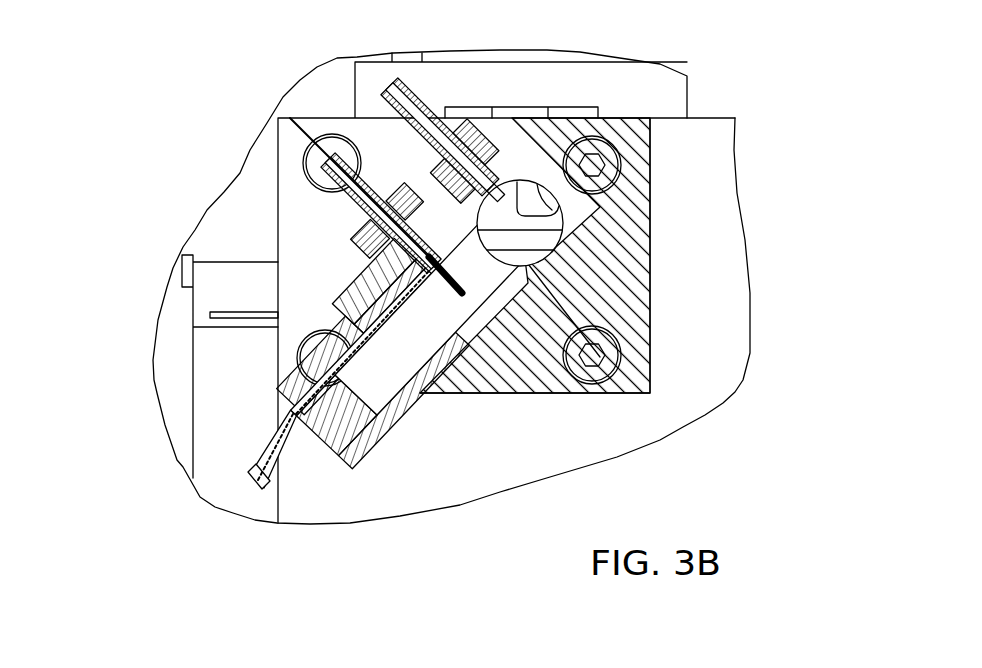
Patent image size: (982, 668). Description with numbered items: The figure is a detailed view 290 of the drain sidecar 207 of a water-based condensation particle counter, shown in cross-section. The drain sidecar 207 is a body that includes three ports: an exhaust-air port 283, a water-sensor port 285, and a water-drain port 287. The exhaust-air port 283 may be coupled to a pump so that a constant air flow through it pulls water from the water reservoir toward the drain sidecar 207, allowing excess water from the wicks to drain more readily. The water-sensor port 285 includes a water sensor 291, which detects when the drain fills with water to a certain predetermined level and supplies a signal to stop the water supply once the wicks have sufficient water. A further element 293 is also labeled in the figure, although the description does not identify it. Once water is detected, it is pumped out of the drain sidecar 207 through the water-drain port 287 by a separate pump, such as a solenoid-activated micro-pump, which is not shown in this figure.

The detailed view 290 is at (142, 128).
The drain sidecar 207 is at (603, 117).
The exhaust-air port 283 is at (430, 97).
The water-sensor port 285 is at (350, 200).
The water-drain port 287 is at (297, 475).
The water sensor 291 is at (467, 288).
The pin 293 is at (302, 122).